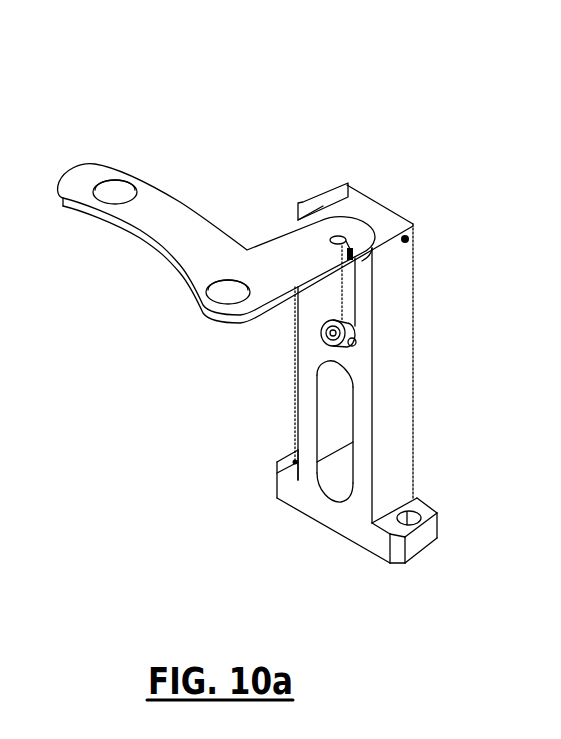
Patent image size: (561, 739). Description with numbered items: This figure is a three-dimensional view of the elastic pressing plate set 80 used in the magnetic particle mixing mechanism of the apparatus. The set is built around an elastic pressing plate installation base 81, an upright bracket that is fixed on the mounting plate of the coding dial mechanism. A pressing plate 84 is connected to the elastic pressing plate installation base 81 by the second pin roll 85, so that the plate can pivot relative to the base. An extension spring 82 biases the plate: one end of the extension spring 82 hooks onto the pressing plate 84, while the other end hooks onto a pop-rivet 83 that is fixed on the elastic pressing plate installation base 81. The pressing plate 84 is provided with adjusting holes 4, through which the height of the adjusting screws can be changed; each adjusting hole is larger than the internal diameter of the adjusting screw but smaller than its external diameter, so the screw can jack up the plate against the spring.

The elastic pressing plate set 80 is at (247, 107).
The adjusting holes 4 is at (348, 219).
The elastic pressing plate installation base 81 is at (400, 388).
The extension spring 82 is at (345, 298).
The pop-rivet 83 is at (354, 341).
The pressing plate 84 is at (373, 215).
The second pin roll 85 is at (409, 239).